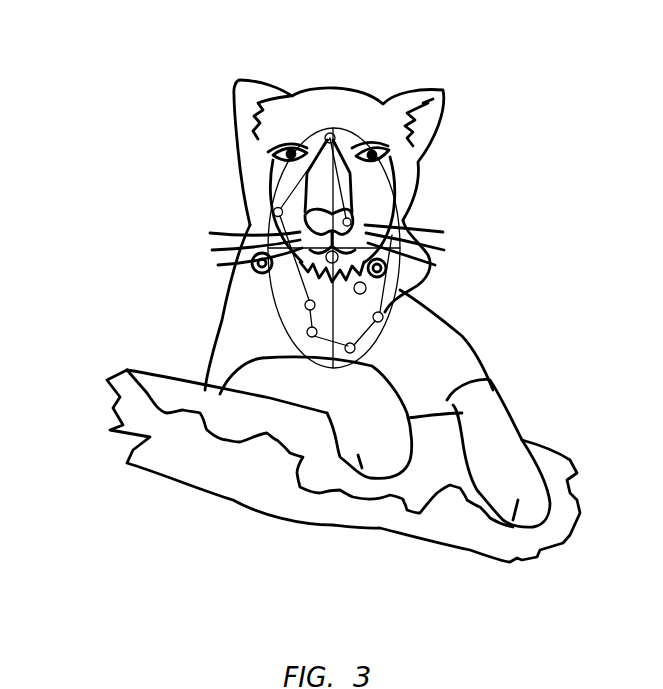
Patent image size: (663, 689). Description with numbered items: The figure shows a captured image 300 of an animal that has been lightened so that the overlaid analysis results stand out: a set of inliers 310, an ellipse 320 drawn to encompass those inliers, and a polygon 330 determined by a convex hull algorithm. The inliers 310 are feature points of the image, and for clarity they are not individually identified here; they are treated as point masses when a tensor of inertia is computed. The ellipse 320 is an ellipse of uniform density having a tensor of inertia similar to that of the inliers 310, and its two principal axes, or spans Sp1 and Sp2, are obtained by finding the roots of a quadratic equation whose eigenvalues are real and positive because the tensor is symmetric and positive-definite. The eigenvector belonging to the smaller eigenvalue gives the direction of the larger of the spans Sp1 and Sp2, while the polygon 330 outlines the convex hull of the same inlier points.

The input image of an animal 300 is at (143, 53).
The inliers 310 is at (345, 349).
The ellipse 320 is at (404, 293).
The polygon 330 is at (362, 190).
The span Sp1 is at (273, 213).
The span Sp2 is at (331, 192).